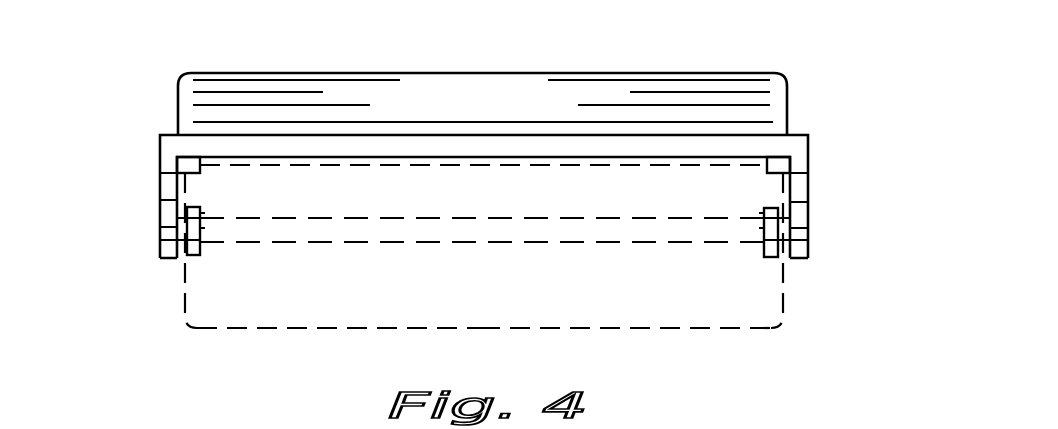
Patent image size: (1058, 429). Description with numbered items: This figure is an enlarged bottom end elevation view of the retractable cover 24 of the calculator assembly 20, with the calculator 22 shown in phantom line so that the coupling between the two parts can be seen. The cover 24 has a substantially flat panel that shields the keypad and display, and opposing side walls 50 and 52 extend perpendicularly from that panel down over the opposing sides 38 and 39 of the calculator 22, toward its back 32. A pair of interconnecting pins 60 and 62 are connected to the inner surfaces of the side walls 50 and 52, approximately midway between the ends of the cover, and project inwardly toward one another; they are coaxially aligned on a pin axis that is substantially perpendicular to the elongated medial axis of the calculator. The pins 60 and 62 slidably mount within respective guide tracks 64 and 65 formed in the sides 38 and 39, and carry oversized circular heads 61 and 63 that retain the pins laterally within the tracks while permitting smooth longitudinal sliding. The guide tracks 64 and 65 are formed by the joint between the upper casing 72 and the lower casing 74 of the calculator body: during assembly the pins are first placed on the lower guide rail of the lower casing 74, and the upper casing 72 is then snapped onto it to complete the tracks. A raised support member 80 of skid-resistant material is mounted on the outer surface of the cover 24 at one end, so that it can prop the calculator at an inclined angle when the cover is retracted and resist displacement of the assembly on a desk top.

The calculator assembly 20 is at (872, 206).
The calculator 22 is at (236, 336).
The retractable cover 24 is at (154, 126).
The back 32 is at (285, 328).
The side 38 is at (783, 290).
The side 39 is at (185, 285).
The side wall 50 is at (808, 198).
The side wall 52 is at (160, 228).
The interconnecting pin 60 is at (756, 246).
The circular head 61 is at (764, 214).
The interconnecting pin 62 is at (210, 241).
The circular head 63 is at (200, 216).
The guide track 64 is at (762, 228).
The guide track 65 is at (200, 228).
The upper casing 72 is at (438, 190).
The lower casing 74 is at (670, 318).
The raised support member 80 is at (780, 100).